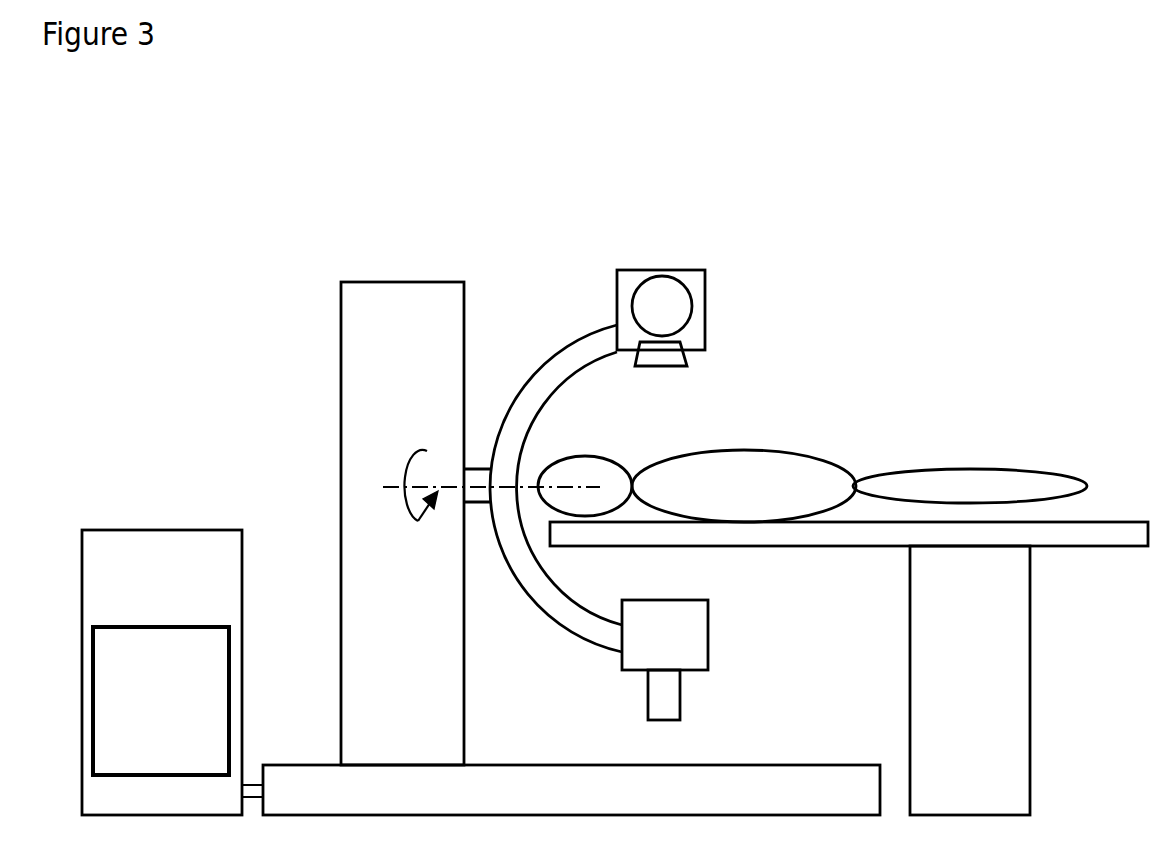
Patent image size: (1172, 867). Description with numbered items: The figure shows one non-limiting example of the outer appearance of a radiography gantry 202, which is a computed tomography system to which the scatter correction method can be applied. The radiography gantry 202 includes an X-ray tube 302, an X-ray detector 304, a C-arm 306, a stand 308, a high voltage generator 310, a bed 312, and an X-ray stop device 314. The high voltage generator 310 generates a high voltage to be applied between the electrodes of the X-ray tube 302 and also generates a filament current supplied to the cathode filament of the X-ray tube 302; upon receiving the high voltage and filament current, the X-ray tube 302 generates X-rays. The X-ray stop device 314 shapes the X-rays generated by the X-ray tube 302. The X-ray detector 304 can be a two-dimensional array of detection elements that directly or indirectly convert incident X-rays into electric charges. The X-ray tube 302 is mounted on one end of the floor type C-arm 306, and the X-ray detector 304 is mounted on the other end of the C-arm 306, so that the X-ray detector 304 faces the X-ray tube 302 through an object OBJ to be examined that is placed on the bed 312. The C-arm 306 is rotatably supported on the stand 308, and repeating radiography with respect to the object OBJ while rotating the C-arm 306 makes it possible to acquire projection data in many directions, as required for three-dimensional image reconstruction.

The radiography gantry 202 is at (693, 177).
The X-ray tube 302 is at (706, 289).
The X-ray detector 304 is at (708, 621).
The C-arm 306 is at (554, 357).
The stand 308 is at (412, 282).
The high voltage generator 310 is at (196, 627).
The bed 312 is at (1121, 520).
The X-ray stop device 314 is at (675, 366).
The object OBJ is at (802, 452).